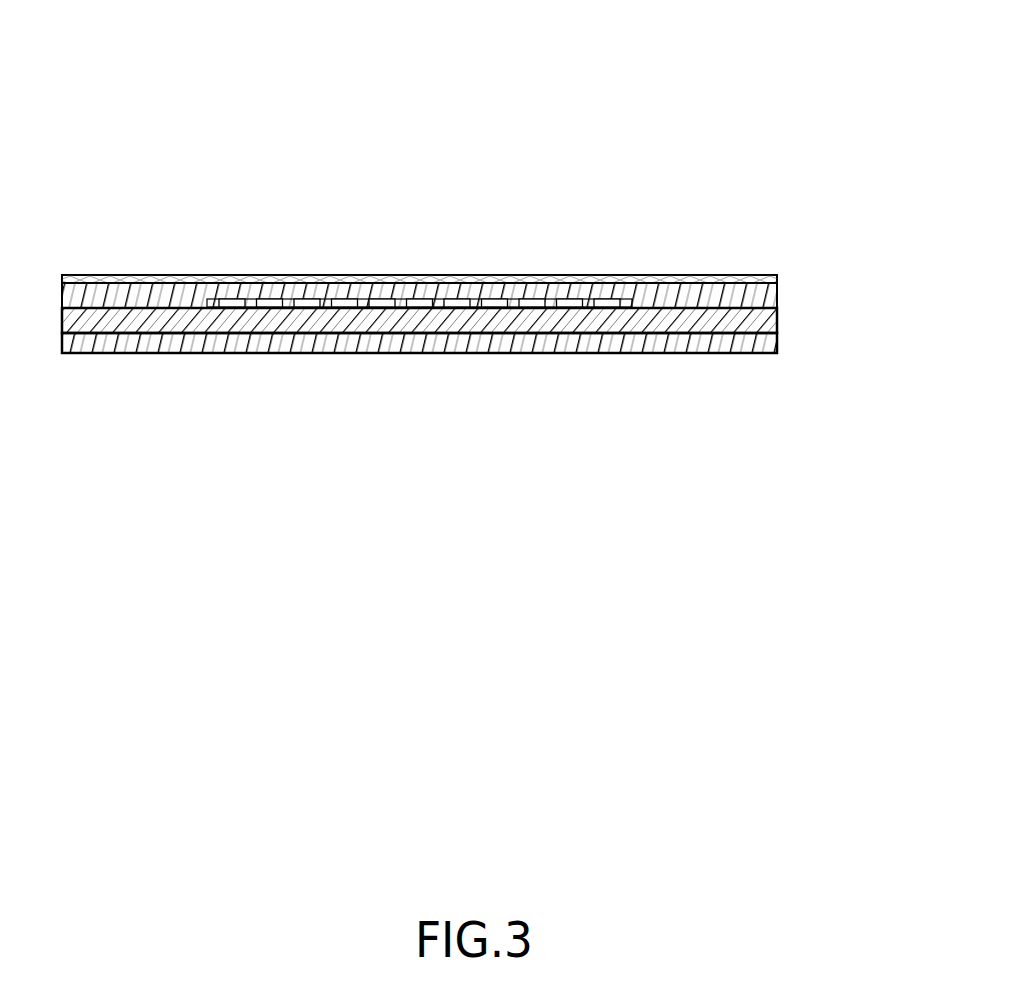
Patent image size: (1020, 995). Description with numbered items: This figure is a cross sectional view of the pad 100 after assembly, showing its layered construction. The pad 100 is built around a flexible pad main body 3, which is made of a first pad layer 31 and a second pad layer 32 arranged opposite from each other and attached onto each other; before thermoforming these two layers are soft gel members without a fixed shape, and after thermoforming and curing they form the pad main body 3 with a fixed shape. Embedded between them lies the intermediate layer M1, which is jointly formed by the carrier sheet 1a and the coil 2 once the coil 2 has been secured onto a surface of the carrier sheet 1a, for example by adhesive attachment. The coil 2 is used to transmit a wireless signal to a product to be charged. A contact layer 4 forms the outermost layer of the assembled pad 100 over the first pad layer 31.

The pad 100 is at (451, 35).
The contact layer 4 is at (692, 283).
The first pad layer 31 is at (765, 297).
The coil 2 is at (550, 306).
The carrier sheet 1a is at (437, 318).
The second pad layer 32 is at (748, 345).
The pad main body 3 is at (650, 353).
The intermediate layer M1 is at (548, 465).